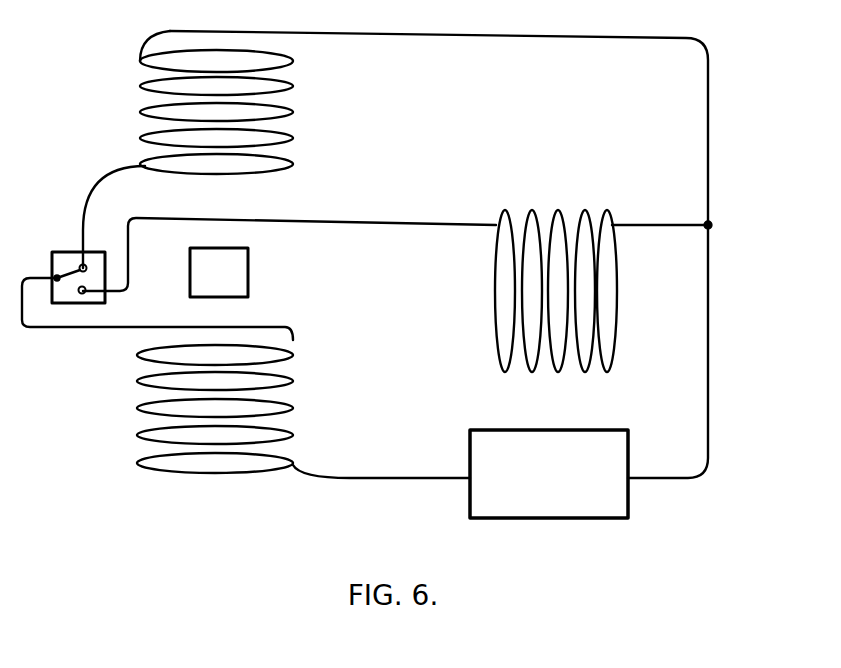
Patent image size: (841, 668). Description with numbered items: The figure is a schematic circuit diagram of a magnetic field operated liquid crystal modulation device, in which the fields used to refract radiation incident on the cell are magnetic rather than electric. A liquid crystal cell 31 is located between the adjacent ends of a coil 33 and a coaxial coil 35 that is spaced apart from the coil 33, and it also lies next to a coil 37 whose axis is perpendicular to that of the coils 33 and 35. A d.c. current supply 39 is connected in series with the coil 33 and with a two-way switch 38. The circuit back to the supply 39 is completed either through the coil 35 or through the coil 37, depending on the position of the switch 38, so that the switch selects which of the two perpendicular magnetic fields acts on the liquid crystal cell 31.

The liquid crystal cell 31 is at (203, 289).
The coil 33 is at (298, 372).
The coaxial coil 35 is at (295, 116).
The coil 37 is at (577, 211).
The two-way switch 38 is at (54, 253).
The d.c. current supply 39 is at (575, 519).